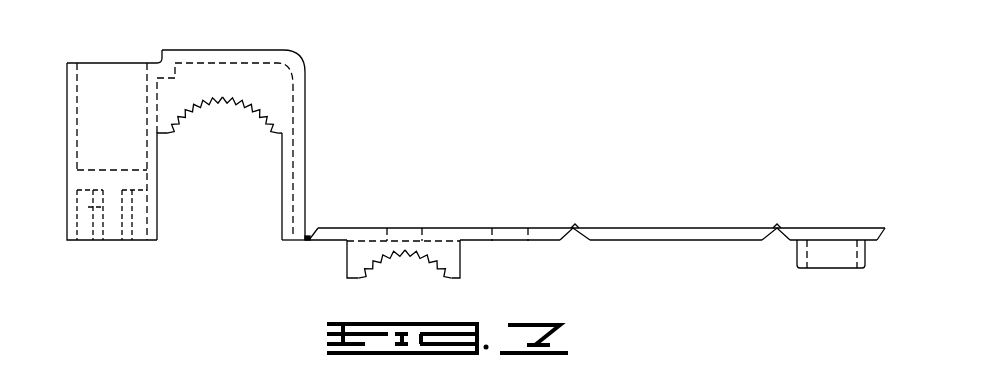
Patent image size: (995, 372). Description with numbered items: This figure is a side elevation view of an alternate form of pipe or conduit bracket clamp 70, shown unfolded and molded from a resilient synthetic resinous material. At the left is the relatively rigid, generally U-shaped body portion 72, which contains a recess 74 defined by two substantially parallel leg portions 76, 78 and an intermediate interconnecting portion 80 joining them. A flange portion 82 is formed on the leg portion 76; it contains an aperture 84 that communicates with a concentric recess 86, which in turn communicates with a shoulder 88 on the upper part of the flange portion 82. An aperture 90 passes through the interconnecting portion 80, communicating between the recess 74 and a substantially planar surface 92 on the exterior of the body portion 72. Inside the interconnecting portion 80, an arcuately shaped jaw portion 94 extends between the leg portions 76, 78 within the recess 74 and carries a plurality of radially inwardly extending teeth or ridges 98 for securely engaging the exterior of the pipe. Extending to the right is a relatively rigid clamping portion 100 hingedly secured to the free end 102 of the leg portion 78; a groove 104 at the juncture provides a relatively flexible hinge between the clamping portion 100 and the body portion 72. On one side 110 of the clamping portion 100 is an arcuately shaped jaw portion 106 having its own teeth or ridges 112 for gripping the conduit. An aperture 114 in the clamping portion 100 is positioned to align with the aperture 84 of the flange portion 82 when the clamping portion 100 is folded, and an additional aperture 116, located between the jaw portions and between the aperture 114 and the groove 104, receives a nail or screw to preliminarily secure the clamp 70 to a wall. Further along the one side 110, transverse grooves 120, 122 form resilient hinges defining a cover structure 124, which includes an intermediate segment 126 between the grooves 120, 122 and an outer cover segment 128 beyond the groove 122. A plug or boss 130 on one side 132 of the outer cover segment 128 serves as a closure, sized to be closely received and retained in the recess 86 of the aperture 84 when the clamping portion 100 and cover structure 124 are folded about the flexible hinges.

The pipe or conduit bracket clamp 70 is at (304, 46).
The body portion 72 is at (306, 92).
The recess 74 is at (280, 146).
The leg portion 76 is at (158, 208).
The leg portion 78 is at (281, 209).
The interconnecting portion 80 is at (252, 52).
The flange portion 82 is at (72, 180).
The aperture 84 is at (97, 208).
The concentric recess 86 is at (79, 97).
The shoulder 88 is at (110, 63).
The aperture 90 is at (201, 62).
The planar surface 92 is at (182, 50).
The jaw portion 94 is at (210, 80).
The teeth or ridges 98 is at (236, 103).
The clamping portion 100 is at (355, 228).
The free end 102 is at (300, 243).
The groove 104 is at (311, 234).
The jaw portion 106 is at (390, 252).
The one side 110 is at (337, 245).
The teeth or ridges 112 is at (413, 260).
The aperture 114 is at (493, 240).
The aperture 116 is at (387, 238).
The transverse groove 120 is at (575, 232).
The transverse groove 122 is at (777, 242).
The cover structure 124 is at (700, 232).
The intermediate segment 126 is at (637, 230).
The outer cover segment 128 is at (832, 232).
The plug or boss 130 is at (820, 270).
The one side 132 is at (873, 242).